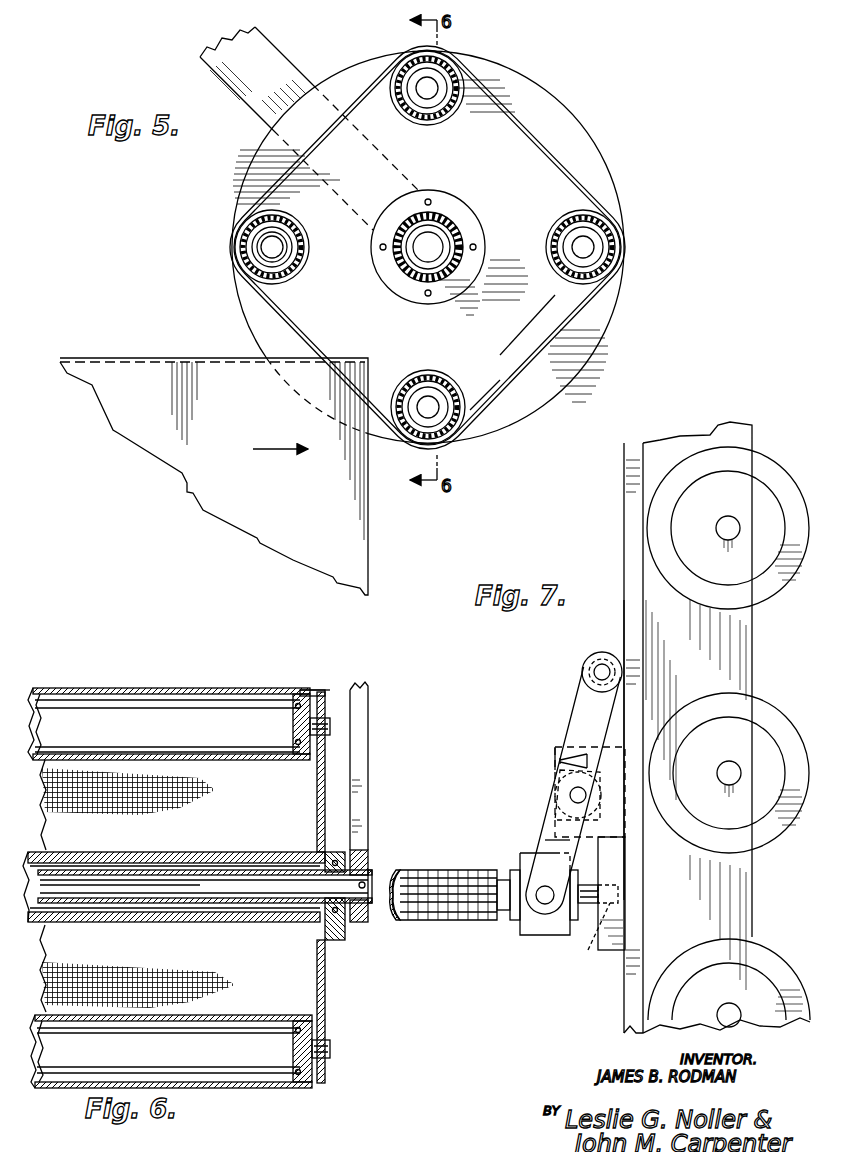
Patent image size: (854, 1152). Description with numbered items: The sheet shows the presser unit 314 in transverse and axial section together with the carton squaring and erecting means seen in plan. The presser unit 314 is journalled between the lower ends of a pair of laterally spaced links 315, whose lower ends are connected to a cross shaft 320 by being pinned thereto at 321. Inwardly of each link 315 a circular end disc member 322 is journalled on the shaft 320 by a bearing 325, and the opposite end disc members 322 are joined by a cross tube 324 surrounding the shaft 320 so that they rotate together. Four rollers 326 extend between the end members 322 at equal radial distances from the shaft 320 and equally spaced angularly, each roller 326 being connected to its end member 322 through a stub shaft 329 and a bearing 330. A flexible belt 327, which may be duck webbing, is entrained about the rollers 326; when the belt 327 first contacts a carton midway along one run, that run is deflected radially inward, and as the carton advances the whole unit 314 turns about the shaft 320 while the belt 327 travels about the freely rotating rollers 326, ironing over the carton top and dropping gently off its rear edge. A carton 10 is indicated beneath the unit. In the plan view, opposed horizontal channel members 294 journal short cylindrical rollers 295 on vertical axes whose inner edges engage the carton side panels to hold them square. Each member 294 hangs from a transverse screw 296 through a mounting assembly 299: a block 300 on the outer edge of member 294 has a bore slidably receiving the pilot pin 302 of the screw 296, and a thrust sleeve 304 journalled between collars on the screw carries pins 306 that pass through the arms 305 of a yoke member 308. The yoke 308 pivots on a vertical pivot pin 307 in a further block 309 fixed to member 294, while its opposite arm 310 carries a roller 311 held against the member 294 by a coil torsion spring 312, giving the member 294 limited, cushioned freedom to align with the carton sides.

In FIG. 5, the sheet 10 is at (113, 362).
In FIG. 5, the presser unit 314 is at (612, 152).
In FIG. 6, the presser unit 314 is at (292, 680).
In FIG. 5, the link 315 is at (290, 56).
In FIG. 6, the link 315 is at (368, 706).
In FIG. 5, the cross shaft 320 is at (445, 238).
In FIG. 6, the cross shaft 320 is at (180, 868).
In FIG. 6, the pin 321 is at (370, 872).
In FIG. 5, the end disc member 322 is at (570, 388).
In FIG. 6, the end disc member 322 is at (317, 803).
In FIG. 5, the cross tube 324 is at (410, 285).
In FIG. 6, the cross tube 324 is at (222, 920).
In FIG. 6, the bearing 325 is at (345, 930).
In FIG. 5, the roller 326 is at (440, 120).
In FIG. 6, the roller 326 is at (150, 710).
In FIG. 5, the flexible belt 327 is at (470, 412).
In FIG. 6, the flexible belt 327 is at (80, 770).
In FIG. 5, the stub shaft 329 is at (243, 262).
In FIG. 6, the stub shaft 329 is at (290, 733).
In FIG. 6, the bearing 330 is at (318, 690).
In FIG. 7, the horizontal channel member 294 is at (672, 440).
In FIG. 7, the roller 295 is at (770, 460).
In FIG. 7, the screw 296 is at (440, 920).
In FIG. 7, the mounting assembly 299 is at (545, 828).
In FIG. 7, the block 300 is at (620, 952).
In FIG. 7, the pilot pin 302 is at (592, 905).
In FIG. 7, the thrust sleeve 304 is at (532, 935).
In FIG. 7, the arm 305 is at (540, 843).
In FIG. 7, the pin 306 is at (536, 905).
In FIG. 7, the pivot pin 307 is at (572, 792).
In FIG. 7, the yoke member 308 is at (548, 798).
In FIG. 7, the block 309 is at (615, 752).
In FIG. 7, the arm 310 is at (584, 695).
In FIG. 7, the roller 311 is at (592, 658).
In FIG. 7, the coil torsion spring 312 is at (560, 760).